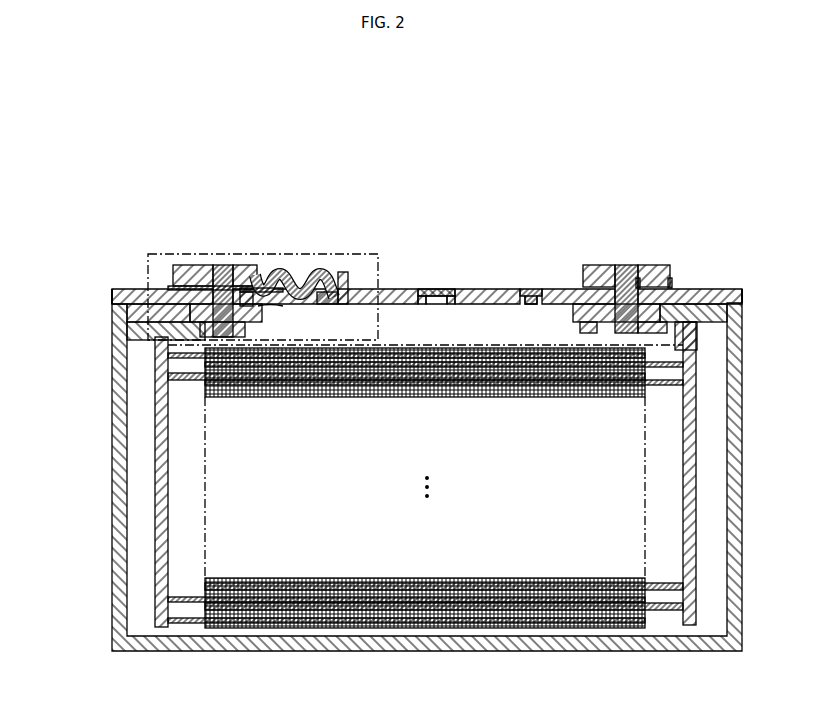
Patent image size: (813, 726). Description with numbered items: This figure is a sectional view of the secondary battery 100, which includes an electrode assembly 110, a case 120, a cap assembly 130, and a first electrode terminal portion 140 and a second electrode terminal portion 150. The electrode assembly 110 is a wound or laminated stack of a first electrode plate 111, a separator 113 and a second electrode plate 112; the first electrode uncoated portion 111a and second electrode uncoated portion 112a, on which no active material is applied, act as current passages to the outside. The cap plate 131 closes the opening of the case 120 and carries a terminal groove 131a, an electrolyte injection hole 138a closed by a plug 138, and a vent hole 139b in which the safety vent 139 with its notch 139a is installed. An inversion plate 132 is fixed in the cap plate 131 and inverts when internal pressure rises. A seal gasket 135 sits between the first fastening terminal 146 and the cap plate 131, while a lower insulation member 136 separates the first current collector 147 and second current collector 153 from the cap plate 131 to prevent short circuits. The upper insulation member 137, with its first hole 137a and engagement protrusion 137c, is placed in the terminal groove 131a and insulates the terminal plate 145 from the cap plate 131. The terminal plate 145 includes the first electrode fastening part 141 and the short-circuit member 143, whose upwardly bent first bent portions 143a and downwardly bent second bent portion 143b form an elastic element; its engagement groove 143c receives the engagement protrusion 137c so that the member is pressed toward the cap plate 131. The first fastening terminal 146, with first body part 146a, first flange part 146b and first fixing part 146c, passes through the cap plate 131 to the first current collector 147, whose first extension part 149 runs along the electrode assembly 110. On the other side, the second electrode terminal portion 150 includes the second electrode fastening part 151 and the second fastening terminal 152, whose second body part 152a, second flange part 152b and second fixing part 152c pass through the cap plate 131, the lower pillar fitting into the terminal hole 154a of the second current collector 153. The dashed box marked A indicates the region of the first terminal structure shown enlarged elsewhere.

The secondary battery 100 is at (36, 98).
The electrode assembly 110 is at (508, 636).
The first electrode plate 111 is at (312, 625).
The first electrode uncoated portion 111a is at (172, 630).
The second electrode plate 112 is at (578, 626).
The second electrode uncoated portion 112a is at (665, 626).
The separator 113 is at (440, 628).
The case 120 is at (742, 488).
The cap assembly 130 is at (495, 214).
The cap plate 131 is at (487, 290).
The terminal groove 131a is at (349, 272).
The inversion plate 132 is at (282, 313).
The seal gasket 135 is at (220, 266).
The lower insulation member 136 is at (131, 318).
The upper insulation member 137 is at (176, 265).
The first hole 137a is at (625, 265).
The engagement protrusion 137c is at (350, 283).
The plug 138 is at (530, 289).
The electrolyte injection hole 138a is at (528, 303).
The safety vent 139 is at (448, 290).
The notch 139a is at (425, 290).
The vent hole 139b is at (440, 302).
The first electrode terminal portion 140 is at (338, 237).
The first electrode fastening part 141 is at (242, 265).
The short-circuit member 143 is at (348, 194).
The first bent portion 143a is at (283, 264).
The second bent portion 143b is at (306, 265).
The engagement groove 143c is at (338, 268).
The terminal plate 145 is at (297, 220).
The first fastening terminal 146 is at (136, 296).
The first body part 146a is at (112, 295).
The first flange part 146b is at (112, 324).
The first fixing part 146c is at (147, 263).
The first current collector 147 is at (152, 432).
The first extension part 149 is at (155, 492).
The second electrode terminal portion 150 is at (674, 252).
The second electrode fastening part 151 is at (592, 265).
The second fastening terminal 152 is at (680, 227).
The second body part 152a is at (664, 264).
The second flange part 152b is at (697, 250).
The second fixing part 152c is at (640, 265).
The second current collector 153 is at (698, 432).
The terminal hole 154a is at (645, 335).
The region A is at (146, 254).